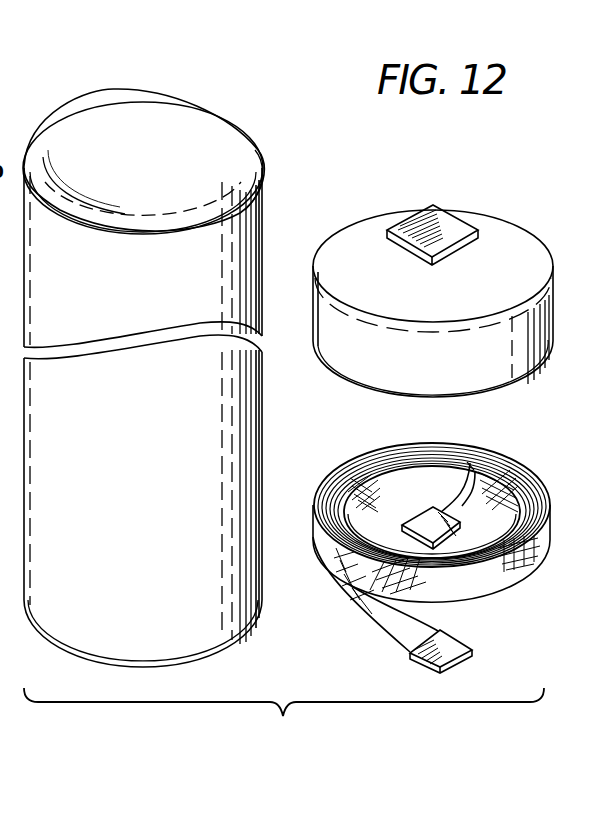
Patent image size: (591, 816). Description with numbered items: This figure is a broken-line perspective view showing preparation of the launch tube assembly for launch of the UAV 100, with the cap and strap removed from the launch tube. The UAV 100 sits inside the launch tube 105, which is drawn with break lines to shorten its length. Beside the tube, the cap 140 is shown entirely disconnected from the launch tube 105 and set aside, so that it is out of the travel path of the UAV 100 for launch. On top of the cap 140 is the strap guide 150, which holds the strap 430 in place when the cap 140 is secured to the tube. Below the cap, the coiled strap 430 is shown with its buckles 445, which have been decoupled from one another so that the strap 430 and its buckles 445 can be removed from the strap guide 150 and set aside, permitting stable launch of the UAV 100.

The UAV 100 is at (170, 92).
The launch tube 105 is at (262, 213).
The cap 140 is at (503, 258).
The strap guide 150 is at (440, 210).
The strap 430 is at (504, 460).
The buckles 445 is at (450, 536).